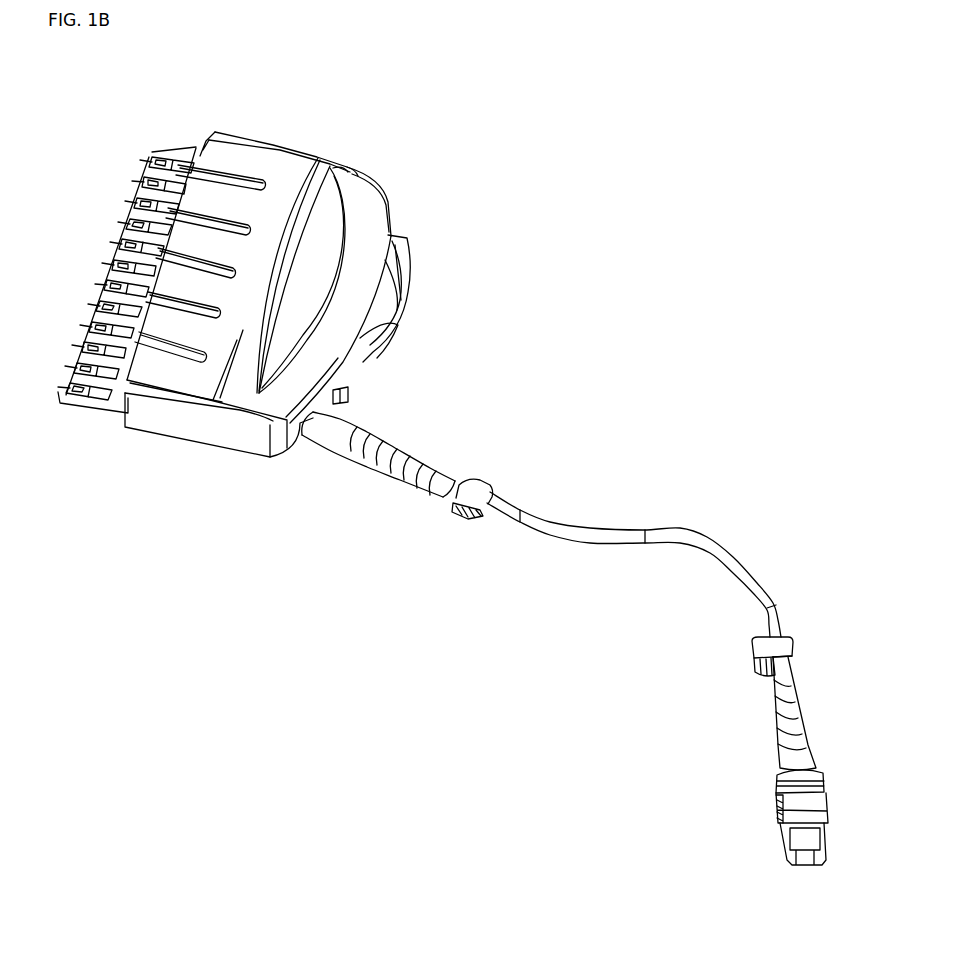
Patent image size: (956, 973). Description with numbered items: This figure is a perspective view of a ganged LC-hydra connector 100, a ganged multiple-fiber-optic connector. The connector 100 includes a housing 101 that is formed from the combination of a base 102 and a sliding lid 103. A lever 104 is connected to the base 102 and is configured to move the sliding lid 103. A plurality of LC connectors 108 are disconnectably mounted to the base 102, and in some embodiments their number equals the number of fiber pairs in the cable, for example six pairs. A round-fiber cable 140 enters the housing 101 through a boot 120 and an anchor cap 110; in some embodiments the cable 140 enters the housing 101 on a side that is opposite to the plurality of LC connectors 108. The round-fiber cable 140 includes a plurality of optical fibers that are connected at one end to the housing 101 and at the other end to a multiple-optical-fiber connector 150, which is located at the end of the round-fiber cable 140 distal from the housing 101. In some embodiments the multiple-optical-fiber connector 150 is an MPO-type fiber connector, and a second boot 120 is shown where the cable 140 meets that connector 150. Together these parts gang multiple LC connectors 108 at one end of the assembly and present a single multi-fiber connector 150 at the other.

The ganged LC-hydra connector 100 is at (604, 122).
The housing 101 is at (250, 92).
The base 102 is at (155, 428).
The sliding lid 103 is at (390, 207).
The lever 104 is at (404, 317).
The LC connectors 108 is at (27, 385).
The anchor cap 110 is at (349, 403).
The boot 120 is at (394, 468).
The round-fiber cable 140 is at (674, 528).
The multiple-optical-fiber connector 150 is at (775, 812).